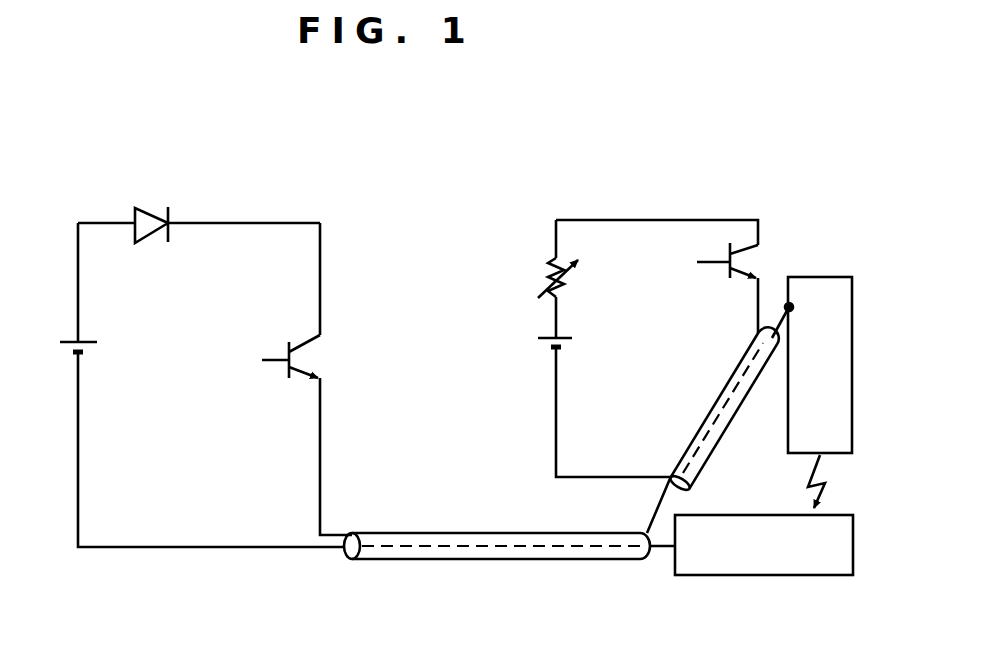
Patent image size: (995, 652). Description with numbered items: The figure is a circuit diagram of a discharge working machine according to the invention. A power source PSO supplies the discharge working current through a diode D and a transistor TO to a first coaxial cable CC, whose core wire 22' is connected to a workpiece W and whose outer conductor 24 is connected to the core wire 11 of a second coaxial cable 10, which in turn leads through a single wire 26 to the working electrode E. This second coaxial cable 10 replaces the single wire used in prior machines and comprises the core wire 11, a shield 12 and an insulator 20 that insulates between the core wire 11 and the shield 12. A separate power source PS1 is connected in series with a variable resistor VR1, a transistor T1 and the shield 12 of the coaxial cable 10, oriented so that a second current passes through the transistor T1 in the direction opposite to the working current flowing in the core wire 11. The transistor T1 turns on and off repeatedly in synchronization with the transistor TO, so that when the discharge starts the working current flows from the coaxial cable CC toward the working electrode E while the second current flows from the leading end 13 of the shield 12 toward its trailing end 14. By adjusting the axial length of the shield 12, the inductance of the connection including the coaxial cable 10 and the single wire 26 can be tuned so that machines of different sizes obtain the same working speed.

The diode D is at (152, 214).
The power source PSO is at (87, 342).
The transistor TO is at (318, 355).
The variable resistor VR1 is at (578, 282).
The power source PS1 is at (565, 337).
The transistor T1 is at (752, 262).
The working electrode E is at (840, 277).
The workpiece W is at (848, 515).
The single wire 26 is at (793, 290).
The insulator 20 is at (738, 371).
The leading end 13 is at (760, 333).
The coaxial cable 10 is at (717, 400).
The shield 12 is at (688, 447).
The trailing end 14 is at (662, 484).
The core wire 11 is at (723, 420).
The coaxial cable CC is at (448, 532).
The inner conductor 22' is at (501, 517).
The cable sheath 24 is at (455, 560).